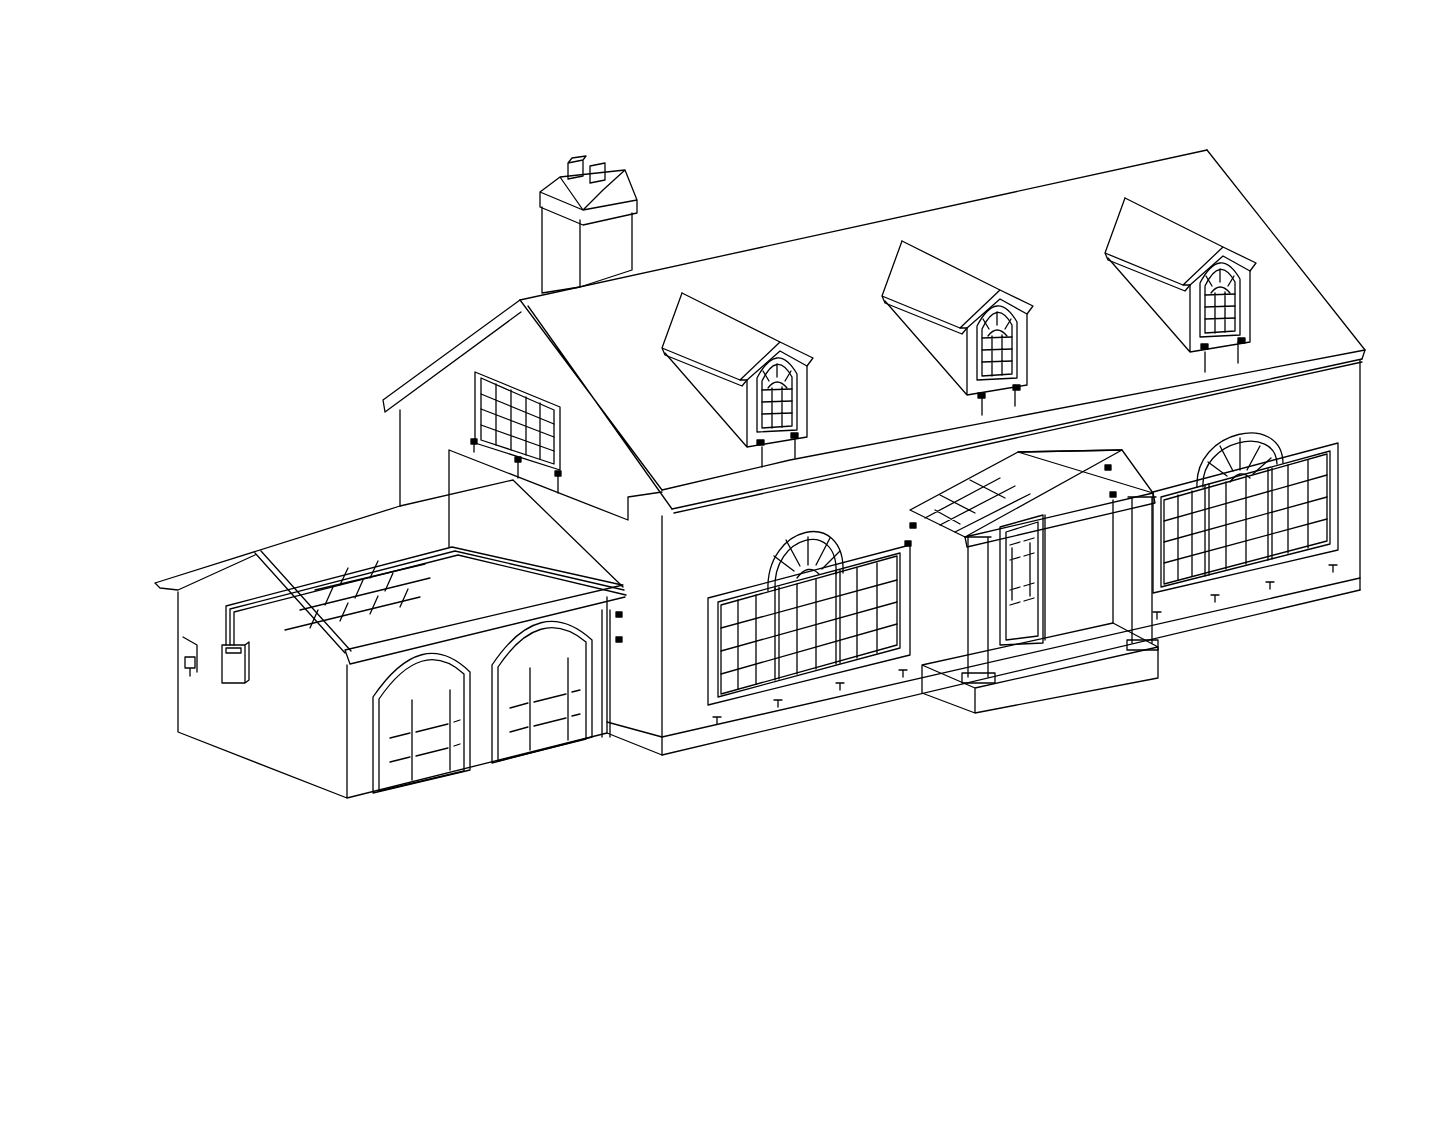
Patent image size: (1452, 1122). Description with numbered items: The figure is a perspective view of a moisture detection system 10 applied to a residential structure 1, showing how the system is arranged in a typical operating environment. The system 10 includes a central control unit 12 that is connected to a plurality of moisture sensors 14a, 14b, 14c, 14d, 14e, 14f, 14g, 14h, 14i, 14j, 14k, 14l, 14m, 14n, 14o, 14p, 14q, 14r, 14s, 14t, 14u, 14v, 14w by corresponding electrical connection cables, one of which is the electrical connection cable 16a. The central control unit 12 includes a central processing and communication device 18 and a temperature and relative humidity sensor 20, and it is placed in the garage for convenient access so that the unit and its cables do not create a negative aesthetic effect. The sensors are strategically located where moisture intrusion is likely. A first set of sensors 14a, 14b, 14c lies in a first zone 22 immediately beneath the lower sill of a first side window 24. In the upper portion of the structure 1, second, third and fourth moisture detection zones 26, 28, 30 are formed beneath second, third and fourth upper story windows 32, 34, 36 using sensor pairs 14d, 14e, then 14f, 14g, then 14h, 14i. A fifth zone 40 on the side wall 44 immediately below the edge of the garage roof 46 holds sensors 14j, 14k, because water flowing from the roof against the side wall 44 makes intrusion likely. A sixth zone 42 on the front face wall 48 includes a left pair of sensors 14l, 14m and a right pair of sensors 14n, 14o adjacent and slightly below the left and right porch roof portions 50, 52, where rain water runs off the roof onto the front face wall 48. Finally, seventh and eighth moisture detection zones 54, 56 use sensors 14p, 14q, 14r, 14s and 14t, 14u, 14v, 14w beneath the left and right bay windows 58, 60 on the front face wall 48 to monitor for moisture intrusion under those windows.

The residential structure 1 is at (1322, 273).
The moisture detection system 10 is at (352, 212).
The central control unit 12 is at (175, 714).
The moisture sensor 14a is at (474, 438).
The moisture sensor 14b is at (518, 458).
The moisture sensor 14c is at (566, 475).
The moisture sensor 14d is at (756, 440).
The moisture sensor 14e is at (799, 436).
The moisture sensor 14f is at (977, 395).
The moisture sensor 14g is at (1021, 387).
The moisture sensor 14h is at (1200, 347).
The moisture sensor 14i is at (1243, 341).
The moisture sensor 14j is at (625, 642).
The moisture sensor 14k is at (625, 617).
The moisture sensor 14l is at (912, 548).
The moisture sensor 14m is at (915, 528).
The moisture sensor 14n is at (1108, 470).
The moisture sensor 14o is at (1113, 496).
The moisture sensor 14p is at (722, 730).
The moisture sensor 14q is at (783, 712).
The moisture sensor 14r is at (843, 695).
The moisture sensor 14s is at (905, 680).
The moisture sensor 14t is at (1160, 624).
The moisture sensor 14u is at (1220, 607).
The moisture sensor 14v is at (1273, 594).
The moisture sensor 14w is at (1337, 577).
The electrical connection cable 16a is at (467, 446).
The central processing and communication device 18 is at (245, 672).
The temperature and relative humidity sensor 20 is at (192, 672).
The first zone 22 is at (477, 432).
The first side window 24 is at (488, 366).
The second moisture detection zone 26 is at (738, 205).
The third moisture detection zone 28 is at (1030, 183).
The fourth moisture detection zone 30 is at (1255, 185).
The second upper story window 32 is at (790, 353).
The third upper story window 34 is at (1018, 308).
The fourth upper story window 36 is at (1240, 255).
The fifth zone 40 is at (645, 612).
The sixth zone 42 is at (1113, 450).
The side wall 44 is at (620, 708).
The garage roof 46 is at (414, 598).
The front face wall 48 is at (851, 503).
The left porch roof portion 50 is at (985, 496).
The right porch roof portion 52 is at (1046, 455).
The seventh moisture detection zone 54 is at (690, 762).
The eighth moisture detection zone 56 is at (1368, 530).
The left bay window 58 is at (754, 580).
The right bay window 60 is at (1275, 440).